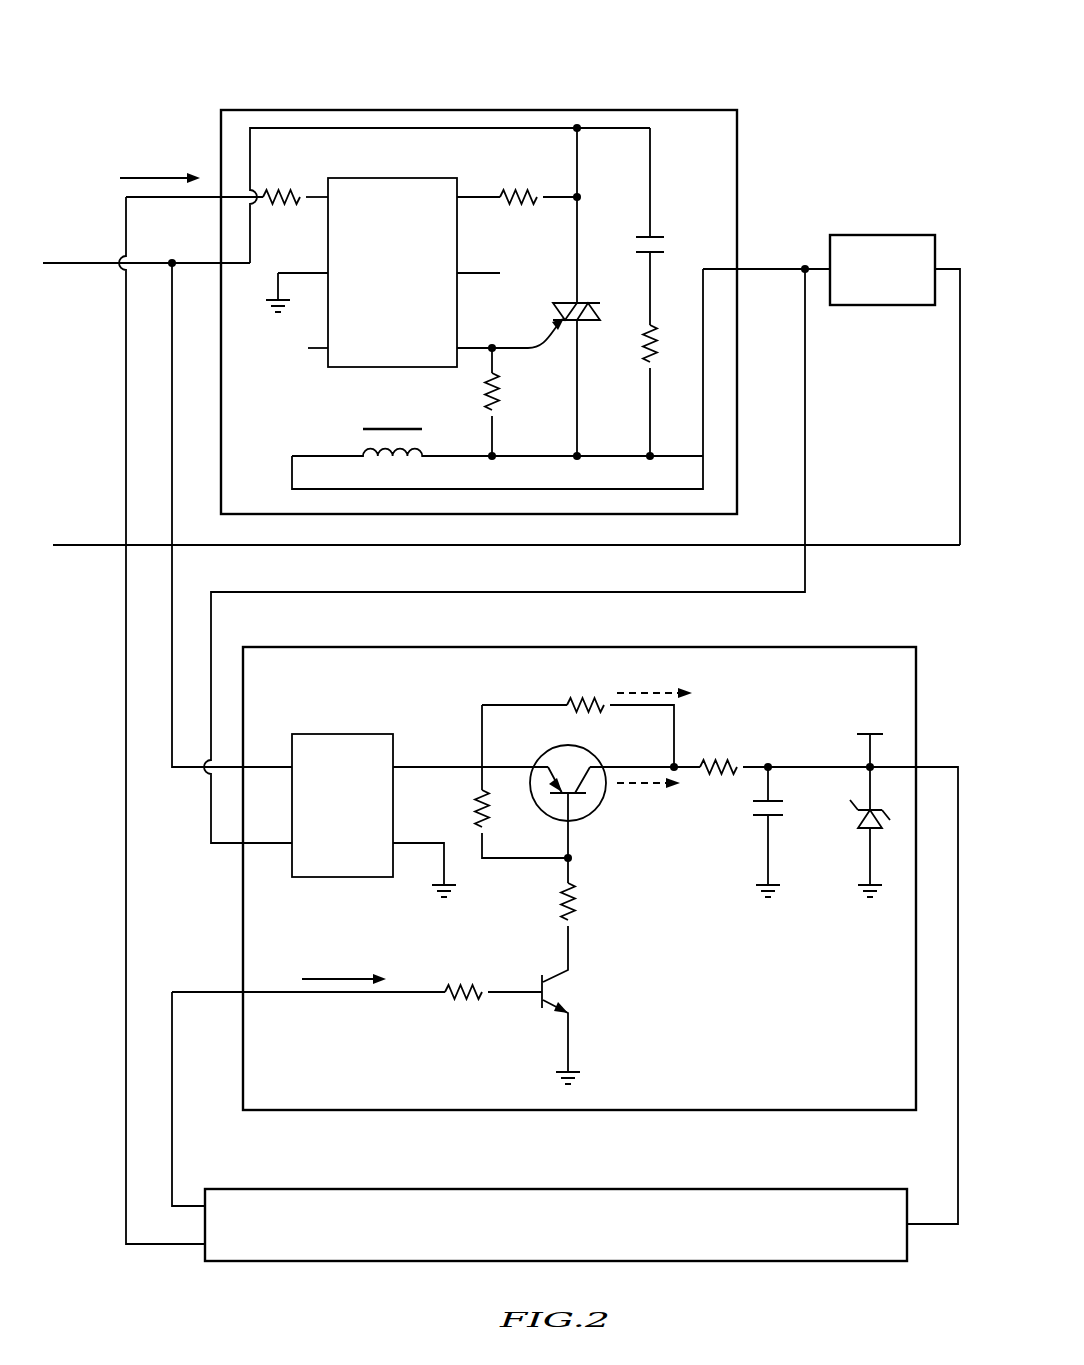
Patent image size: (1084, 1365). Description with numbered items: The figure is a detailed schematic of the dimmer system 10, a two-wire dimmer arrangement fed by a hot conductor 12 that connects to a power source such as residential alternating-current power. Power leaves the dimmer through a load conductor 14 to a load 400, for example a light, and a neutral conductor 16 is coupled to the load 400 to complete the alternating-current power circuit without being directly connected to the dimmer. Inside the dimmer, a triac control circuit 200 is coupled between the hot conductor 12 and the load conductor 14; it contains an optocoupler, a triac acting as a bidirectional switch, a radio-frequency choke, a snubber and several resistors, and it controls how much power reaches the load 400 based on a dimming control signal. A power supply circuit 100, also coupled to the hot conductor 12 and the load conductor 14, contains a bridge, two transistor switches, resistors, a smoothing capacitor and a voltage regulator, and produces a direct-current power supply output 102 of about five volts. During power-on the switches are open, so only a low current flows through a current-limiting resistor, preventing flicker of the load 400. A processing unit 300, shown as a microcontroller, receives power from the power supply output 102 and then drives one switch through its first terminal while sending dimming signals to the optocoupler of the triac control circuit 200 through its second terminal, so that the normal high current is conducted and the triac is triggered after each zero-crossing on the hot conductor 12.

The dimmer system 10 is at (198, 66).
The HOT conductor 12 is at (76, 265).
The LOAD conductor 14 is at (757, 269).
The NEUTRAL conductor 16 is at (97, 547).
The power supply circuit 100 is at (848, 647).
The power supply output 102 is at (836, 686).
The TRIAC control circuit 200 is at (737, 362).
The processing unit 300 is at (803, 1262).
The load 400 is at (878, 235).